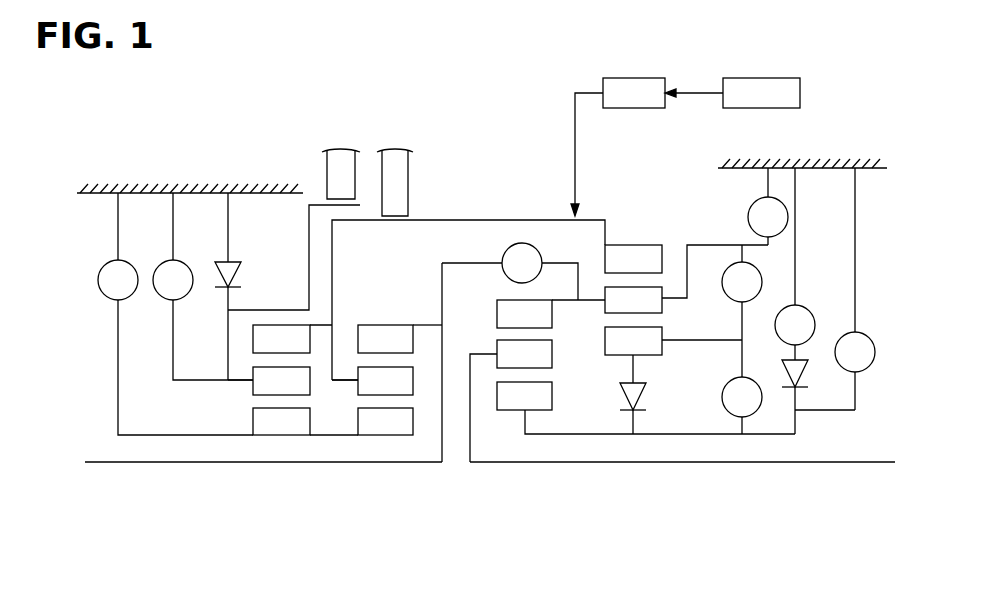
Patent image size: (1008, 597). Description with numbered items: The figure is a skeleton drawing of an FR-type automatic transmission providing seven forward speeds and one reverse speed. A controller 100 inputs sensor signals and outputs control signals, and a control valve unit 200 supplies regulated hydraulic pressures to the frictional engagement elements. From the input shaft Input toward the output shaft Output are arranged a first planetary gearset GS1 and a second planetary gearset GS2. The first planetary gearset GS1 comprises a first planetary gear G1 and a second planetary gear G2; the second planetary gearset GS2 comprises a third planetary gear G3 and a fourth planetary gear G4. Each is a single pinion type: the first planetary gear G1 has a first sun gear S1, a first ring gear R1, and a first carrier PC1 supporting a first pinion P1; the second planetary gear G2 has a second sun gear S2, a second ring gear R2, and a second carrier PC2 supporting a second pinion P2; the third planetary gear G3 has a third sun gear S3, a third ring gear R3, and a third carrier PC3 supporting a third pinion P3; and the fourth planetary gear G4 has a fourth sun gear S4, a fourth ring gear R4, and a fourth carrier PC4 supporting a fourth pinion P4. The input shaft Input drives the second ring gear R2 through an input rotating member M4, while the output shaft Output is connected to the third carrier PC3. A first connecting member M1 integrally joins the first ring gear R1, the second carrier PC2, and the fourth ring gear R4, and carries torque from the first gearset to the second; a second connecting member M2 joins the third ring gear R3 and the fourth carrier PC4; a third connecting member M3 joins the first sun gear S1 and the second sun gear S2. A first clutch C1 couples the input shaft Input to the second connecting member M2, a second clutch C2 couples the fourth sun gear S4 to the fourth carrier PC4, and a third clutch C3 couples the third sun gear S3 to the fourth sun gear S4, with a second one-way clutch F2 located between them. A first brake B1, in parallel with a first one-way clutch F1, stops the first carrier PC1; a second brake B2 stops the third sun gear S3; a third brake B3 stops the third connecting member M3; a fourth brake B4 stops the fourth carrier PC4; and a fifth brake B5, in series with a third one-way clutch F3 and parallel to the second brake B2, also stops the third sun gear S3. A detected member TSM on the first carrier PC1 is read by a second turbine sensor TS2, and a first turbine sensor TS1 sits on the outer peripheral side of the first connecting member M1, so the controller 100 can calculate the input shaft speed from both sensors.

The controller 100 is at (777, 78).
The control valve unit 200 is at (648, 78).
The first brake B1 is at (203, 286).
The second brake B2 is at (855, 289).
The third brake B3 is at (175, 314).
The fourth brake B4 is at (768, 206).
The fifth brake B5 is at (795, 264).
The first clutch C1 is at (510, 271).
The second clutch C2 is at (742, 311).
The third clutch C3 is at (742, 405).
The first one-way clutch F1 is at (234, 260).
The second one-way clutch F2 is at (650, 398).
The third one-way clutch F3 is at (811, 376).
The first ring gear R1 is at (281, 339).
The second ring gear R2 is at (400, 339).
The third ring gear R3 is at (524, 314).
The fourth ring gear R4 is at (633, 259).
The first pinion P1 is at (281, 381).
The second pinion P2 is at (385, 381).
The third pinion P3 is at (524, 354).
The fourth pinion P4 is at (633, 300).
The first sun gear S1 is at (281, 421).
The second sun gear S2 is at (385, 421).
The third sun gear S3 is at (646, 408).
The fourth sun gear S4 is at (673, 341).
The first carrier PC1 is at (237, 382).
The second carrier PC2 is at (340, 383).
The third carrier PC3 is at (483, 353).
The fourth carrier PC4 is at (675, 300).
The first connecting member M1 is at (440, 220).
The second connecting member M2 is at (570, 300).
The third connecting member M3 is at (343, 435).
The input rotating member M4 is at (442, 425).
The first turbine sensor TS1 is at (408, 185).
The second turbine sensor TS2 is at (327, 166).
The detected member for turbine sensor TSM is at (309, 290).
The first planetary gear G1 is at (247, 493).
The second planetary gear G2 is at (355, 493).
The third planetary gear G3 is at (495, 493).
The fourth planetary gear G4 is at (603, 493).
The first planetary gearset GS1 is at (413, 531).
The second planetary gearset GS2 is at (665, 531).
The input shaft Input is at (128, 462).
The output shaft Output is at (797, 462).